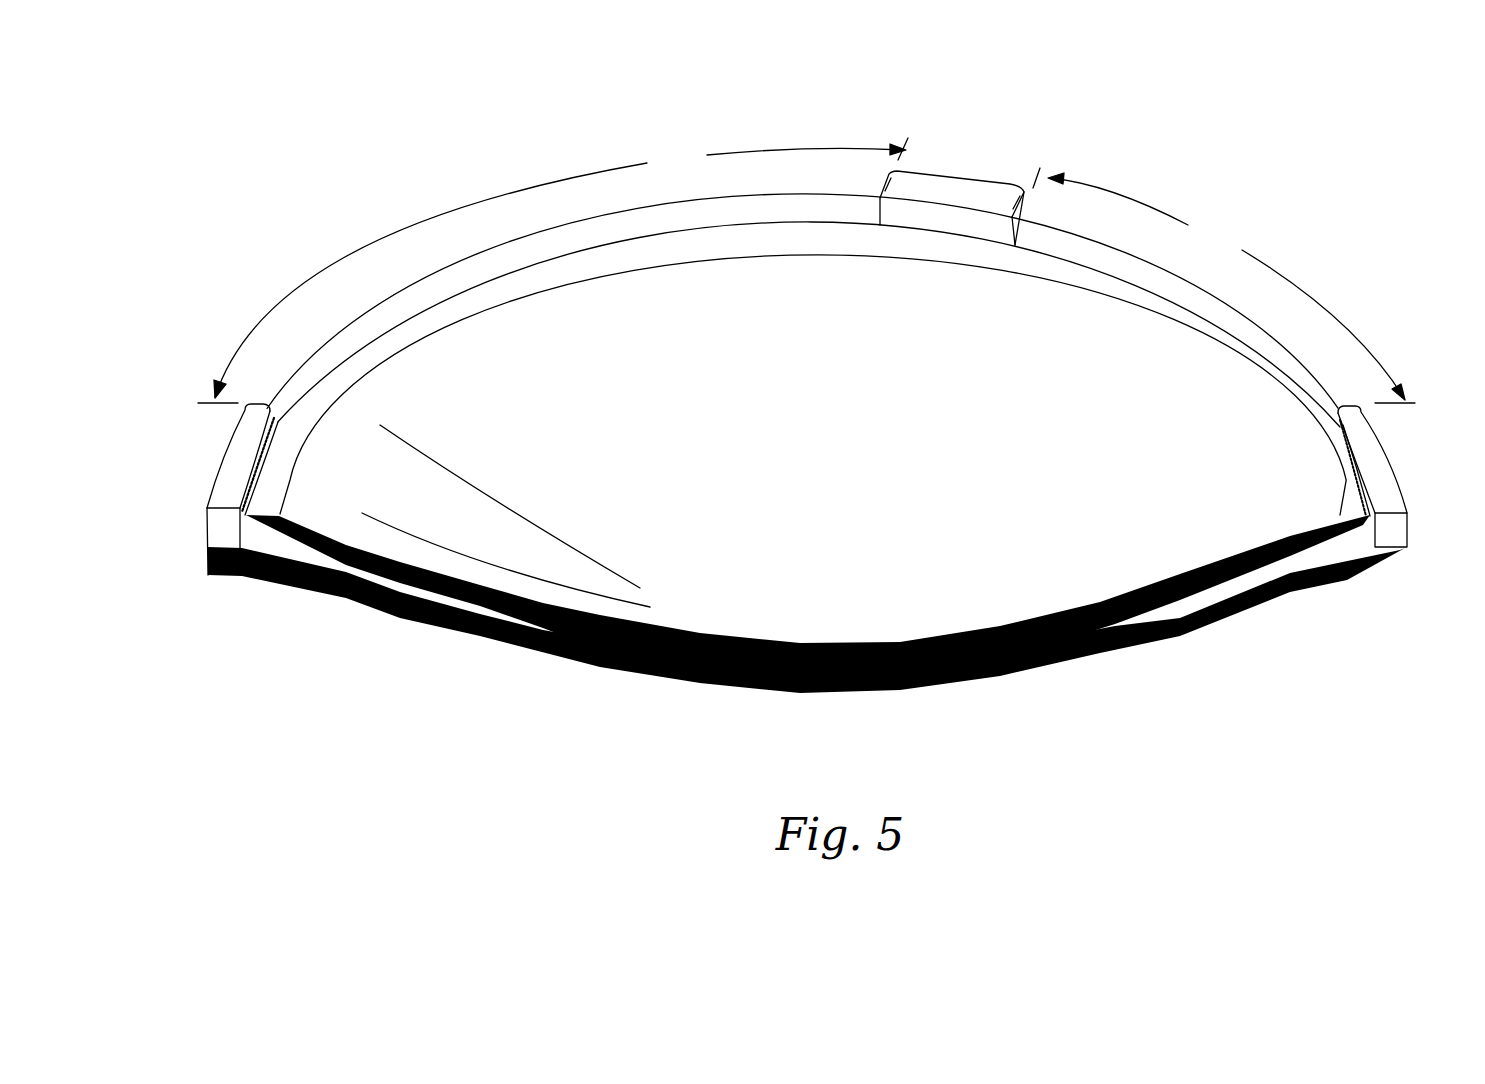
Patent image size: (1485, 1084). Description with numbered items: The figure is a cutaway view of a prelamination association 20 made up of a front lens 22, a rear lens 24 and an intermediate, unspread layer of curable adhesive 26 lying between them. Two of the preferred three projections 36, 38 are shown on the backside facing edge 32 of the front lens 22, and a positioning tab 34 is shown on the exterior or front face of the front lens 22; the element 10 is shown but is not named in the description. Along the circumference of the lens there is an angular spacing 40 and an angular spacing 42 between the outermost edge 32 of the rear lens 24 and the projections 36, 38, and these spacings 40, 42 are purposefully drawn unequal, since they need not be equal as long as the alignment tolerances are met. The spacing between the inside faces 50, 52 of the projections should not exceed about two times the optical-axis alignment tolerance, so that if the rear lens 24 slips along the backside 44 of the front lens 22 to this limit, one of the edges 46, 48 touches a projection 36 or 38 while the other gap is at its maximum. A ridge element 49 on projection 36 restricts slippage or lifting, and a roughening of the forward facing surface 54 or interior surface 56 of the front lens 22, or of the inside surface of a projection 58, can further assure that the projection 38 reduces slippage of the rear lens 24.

The tab 10 is at (948, 182).
The prelamination association 20 is at (810, 457).
The front lens 22 is at (806, 641).
The rear lens 24 is at (488, 292).
The layer of curable adhesive 26 is at (672, 672).
The backside facing edge 32 is at (1283, 358).
The positioning tab 34 is at (217, 575).
The projection 36 is at (261, 519).
The projection 38 is at (1359, 515).
The angular spacing 40 is at (1224, 285).
The angular spacing 42 is at (553, 270).
The backside of the front lens 44 is at (1240, 577).
The edge 46 is at (1362, 552).
The edge 48 is at (249, 540).
The ridge element 49 is at (262, 448).
The inside edge or face 50 is at (244, 545).
The inside edge or face 52 is at (1370, 540).
The forward facing surface 54 is at (383, 578).
The interior surface 56 is at (438, 617).
The inside surface of a projection 58 is at (1360, 460).